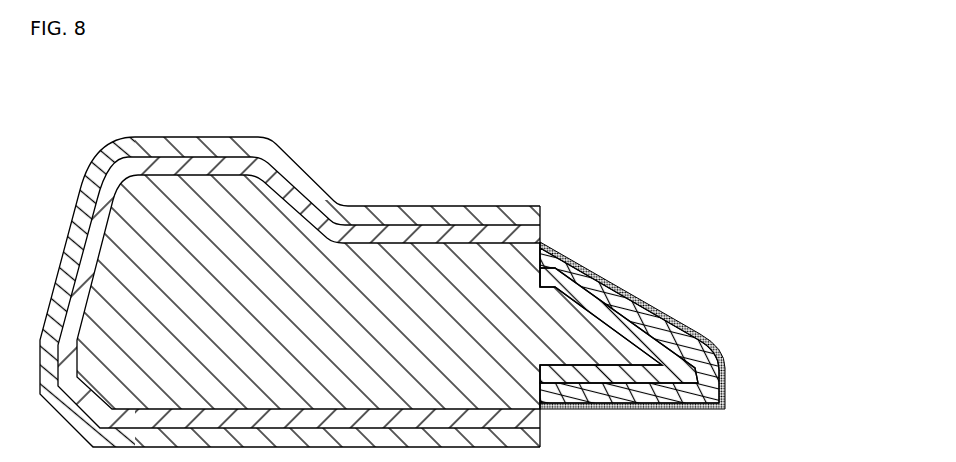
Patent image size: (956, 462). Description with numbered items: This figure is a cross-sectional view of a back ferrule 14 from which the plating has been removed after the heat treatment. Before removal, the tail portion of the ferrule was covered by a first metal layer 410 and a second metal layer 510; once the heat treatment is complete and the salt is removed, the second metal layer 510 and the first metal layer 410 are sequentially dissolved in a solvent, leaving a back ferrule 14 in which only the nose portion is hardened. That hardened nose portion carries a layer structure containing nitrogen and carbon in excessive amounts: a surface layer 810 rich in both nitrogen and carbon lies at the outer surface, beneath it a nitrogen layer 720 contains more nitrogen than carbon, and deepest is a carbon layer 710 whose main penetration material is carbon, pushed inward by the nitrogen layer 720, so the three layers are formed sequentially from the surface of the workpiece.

The back ferrule 14 is at (199, 222).
The second metal layer 510 is at (395, 214).
The first metal layer 410 is at (470, 233).
The carbon layer 710 is at (665, 357).
The nitrogen layer 720 is at (722, 376).
The surface layer 810 is at (725, 388).